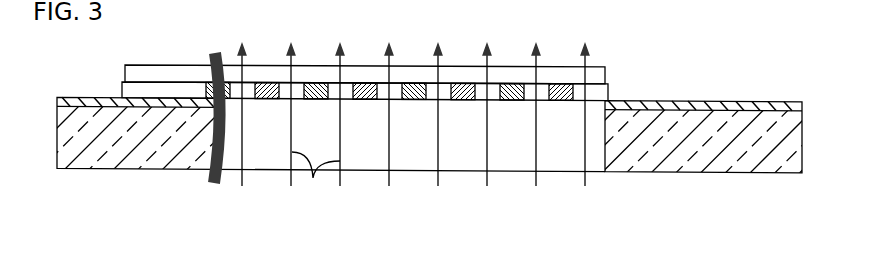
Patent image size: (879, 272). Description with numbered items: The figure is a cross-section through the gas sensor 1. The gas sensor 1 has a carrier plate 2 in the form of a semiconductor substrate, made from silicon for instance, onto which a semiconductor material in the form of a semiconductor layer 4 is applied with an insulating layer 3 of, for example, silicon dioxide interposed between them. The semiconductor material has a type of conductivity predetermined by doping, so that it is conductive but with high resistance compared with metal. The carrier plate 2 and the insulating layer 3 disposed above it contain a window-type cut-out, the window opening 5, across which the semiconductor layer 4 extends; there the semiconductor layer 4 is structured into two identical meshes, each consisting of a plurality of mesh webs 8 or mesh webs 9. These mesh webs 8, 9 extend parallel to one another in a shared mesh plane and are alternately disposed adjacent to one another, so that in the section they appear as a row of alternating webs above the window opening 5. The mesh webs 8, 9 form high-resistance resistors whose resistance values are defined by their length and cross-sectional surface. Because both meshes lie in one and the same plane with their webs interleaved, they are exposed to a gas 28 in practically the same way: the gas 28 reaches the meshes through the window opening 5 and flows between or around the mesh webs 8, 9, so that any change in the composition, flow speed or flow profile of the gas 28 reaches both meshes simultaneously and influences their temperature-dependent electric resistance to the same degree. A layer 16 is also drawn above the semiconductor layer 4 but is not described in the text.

The gas sensor 1 is at (724, 34).
The carrier plate 2 is at (747, 113).
The insulating layer 3 is at (697, 101).
The semiconductor layer 4 is at (119, 83).
The window opening 5 is at (460, 156).
The mesh webs 8 is at (266, 82).
The mesh webs 9 is at (315, 82).
The cover layer 16 is at (187, 64).
The gas 28 is at (316, 182).